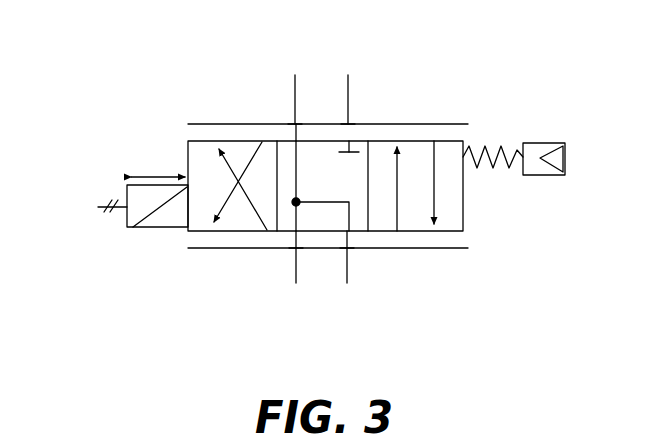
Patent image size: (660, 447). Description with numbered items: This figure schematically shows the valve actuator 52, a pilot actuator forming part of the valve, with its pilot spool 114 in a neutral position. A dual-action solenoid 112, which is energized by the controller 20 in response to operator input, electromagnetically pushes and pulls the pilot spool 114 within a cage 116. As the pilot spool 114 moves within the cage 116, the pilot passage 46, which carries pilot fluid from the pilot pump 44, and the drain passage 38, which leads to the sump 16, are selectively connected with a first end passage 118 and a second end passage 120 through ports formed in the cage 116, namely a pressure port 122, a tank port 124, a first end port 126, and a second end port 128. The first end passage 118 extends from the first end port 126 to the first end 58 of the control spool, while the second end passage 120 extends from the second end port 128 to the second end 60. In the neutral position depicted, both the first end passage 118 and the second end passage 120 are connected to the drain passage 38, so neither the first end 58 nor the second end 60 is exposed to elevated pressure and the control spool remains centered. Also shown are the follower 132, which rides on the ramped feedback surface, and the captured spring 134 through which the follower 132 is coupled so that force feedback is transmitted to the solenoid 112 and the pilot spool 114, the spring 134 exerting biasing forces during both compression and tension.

The valve actuator 52 is at (214, 51).
The dual-action solenoid 112 is at (140, 192).
The pilot spool 114 is at (200, 148).
The cage 116 is at (190, 125).
The pressure port 122 is at (352, 122).
The first end passage 118 is at (295, 268).
The second end passage 120 is at (348, 252).
The tank port 124 is at (297, 123).
The first end port 126 is at (298, 250).
The second end port 128 is at (347, 249).
The follower 132 is at (540, 142).
The captured spring 134 is at (498, 142).
The drain passage 38 is at (294, 122).
The pilot passage 46 is at (350, 122).
The sump 16 is at (297, 76).
The pilot pump 44 is at (348, 76).
The controller 20 is at (102, 205).
The first end 58 is at (296, 293).
The second end 60 is at (349, 293).